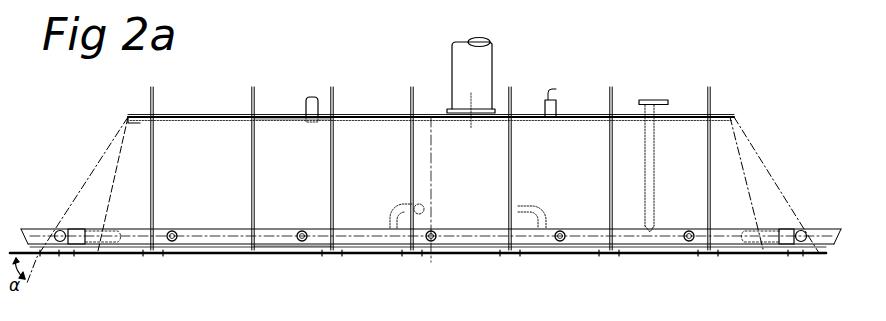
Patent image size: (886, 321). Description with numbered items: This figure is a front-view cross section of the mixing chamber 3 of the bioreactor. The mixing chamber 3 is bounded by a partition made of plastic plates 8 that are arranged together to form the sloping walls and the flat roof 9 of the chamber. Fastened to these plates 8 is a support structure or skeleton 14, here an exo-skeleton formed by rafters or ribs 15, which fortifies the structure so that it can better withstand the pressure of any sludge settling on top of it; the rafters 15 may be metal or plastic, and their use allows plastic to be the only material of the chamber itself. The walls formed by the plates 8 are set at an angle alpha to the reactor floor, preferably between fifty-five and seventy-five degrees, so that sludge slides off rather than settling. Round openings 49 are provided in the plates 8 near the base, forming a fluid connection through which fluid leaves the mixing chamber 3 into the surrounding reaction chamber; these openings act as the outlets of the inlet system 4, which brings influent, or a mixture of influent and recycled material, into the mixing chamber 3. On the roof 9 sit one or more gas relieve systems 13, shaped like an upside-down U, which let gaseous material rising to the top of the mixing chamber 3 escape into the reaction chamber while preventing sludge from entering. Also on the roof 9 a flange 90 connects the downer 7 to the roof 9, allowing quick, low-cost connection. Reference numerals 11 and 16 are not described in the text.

The mixing chamber 3 is at (729, 111).
The inlet system 4 is at (655, 171).
The downer 7 is at (476, 56).
The plates 8 is at (130, 182).
The roof 9 is at (278, 108).
The bottom tube / base frame 11 is at (130, 238).
The gas relieve system 13 is at (312, 97).
The support structure or skeleton 14 is at (142, 133).
The rafters or ribs 15 is at (251, 101).
The side wall panel 16 is at (308, 177).
The round openings 49 is at (302, 241).
The flange 90 is at (477, 117).